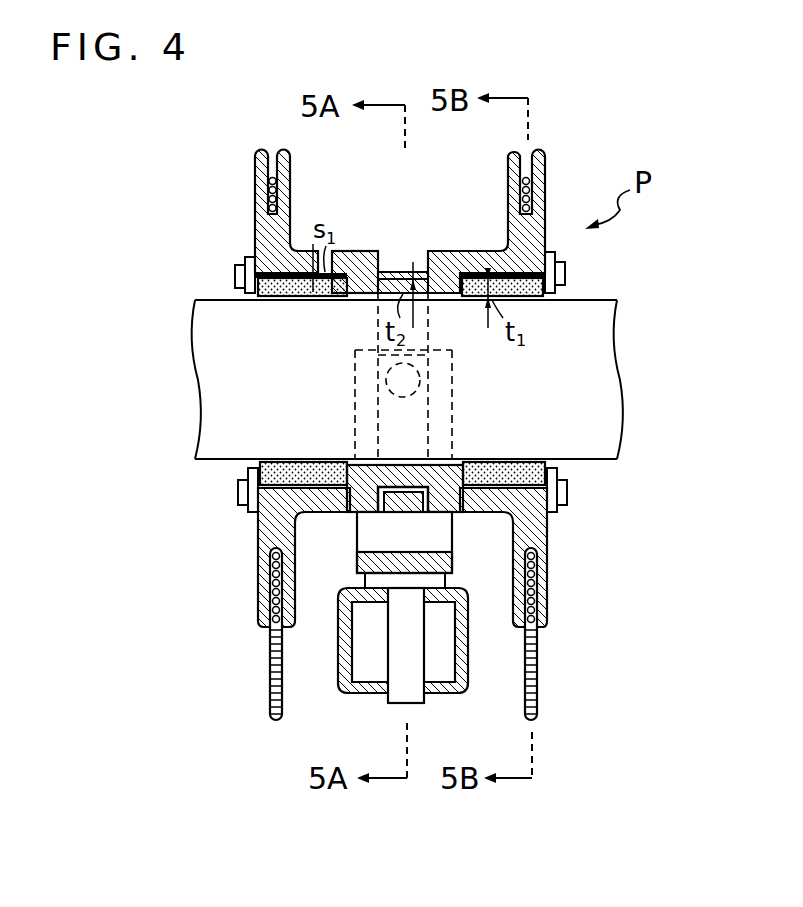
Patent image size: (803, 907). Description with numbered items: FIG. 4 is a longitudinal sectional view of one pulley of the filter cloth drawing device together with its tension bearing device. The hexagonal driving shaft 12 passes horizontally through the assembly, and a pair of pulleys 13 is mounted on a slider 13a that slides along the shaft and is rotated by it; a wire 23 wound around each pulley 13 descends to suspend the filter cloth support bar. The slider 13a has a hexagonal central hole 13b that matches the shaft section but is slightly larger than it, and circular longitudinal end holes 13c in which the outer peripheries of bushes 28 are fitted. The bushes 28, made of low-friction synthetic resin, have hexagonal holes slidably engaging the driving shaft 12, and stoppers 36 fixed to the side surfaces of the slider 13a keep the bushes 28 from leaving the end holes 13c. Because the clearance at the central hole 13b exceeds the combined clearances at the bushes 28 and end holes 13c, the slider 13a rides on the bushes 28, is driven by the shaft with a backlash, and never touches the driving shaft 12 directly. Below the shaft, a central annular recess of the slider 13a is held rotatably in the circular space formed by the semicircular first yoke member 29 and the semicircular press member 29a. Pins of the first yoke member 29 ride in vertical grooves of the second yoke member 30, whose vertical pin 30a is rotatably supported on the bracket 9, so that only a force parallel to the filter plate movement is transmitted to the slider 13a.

The bracket 9 is at (338, 640).
The driving shaft 12 is at (616, 367).
The pulley 13 is at (255, 178).
The slider 13a is at (372, 250).
The central hole 13b is at (370, 300).
The longitudinal end hole 13c is at (270, 250).
The wire 23 is at (538, 662).
The bush 28 is at (275, 300).
The first yoke member 29 is at (403, 521).
The press member 29a is at (403, 270).
The second yoke member 30 is at (368, 533).
The pin 30a is at (418, 650).
The stopper 36 is at (548, 290).